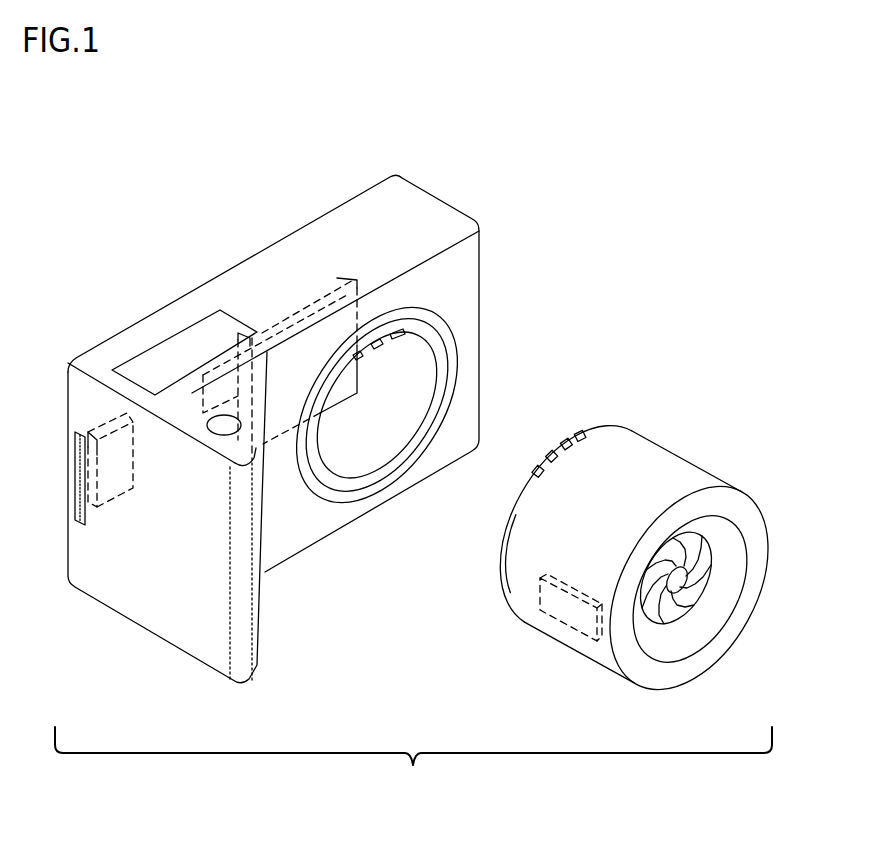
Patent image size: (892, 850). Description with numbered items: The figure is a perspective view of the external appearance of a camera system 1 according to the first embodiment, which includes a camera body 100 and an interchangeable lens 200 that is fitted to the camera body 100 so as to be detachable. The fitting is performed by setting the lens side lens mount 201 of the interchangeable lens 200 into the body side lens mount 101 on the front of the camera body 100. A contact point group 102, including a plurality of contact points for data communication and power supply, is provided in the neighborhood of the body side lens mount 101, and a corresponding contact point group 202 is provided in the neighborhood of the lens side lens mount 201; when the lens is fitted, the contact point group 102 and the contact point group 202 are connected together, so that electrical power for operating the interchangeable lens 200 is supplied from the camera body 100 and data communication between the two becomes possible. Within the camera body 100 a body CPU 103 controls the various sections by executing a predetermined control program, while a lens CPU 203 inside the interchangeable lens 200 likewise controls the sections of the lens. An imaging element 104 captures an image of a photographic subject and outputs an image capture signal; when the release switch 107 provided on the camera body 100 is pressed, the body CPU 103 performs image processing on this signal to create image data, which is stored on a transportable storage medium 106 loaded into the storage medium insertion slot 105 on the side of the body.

The camera system 1 is at (413, 762).
The camera body 100 is at (415, 184).
The body side lens mount 101 is at (450, 343).
The contact point group 102 is at (407, 338).
The body CPU 103 is at (203, 383).
The imaging element 104 is at (337, 278).
The storage medium insertion slot 105 is at (77, 474).
The transportable storage medium 106 is at (103, 423).
The release switch 107 is at (227, 437).
The interchangeable lens 200 is at (650, 435).
The lens side lens mount 201 is at (502, 545).
The contact point group 202 is at (571, 418).
The lens CPU 203 is at (575, 633).